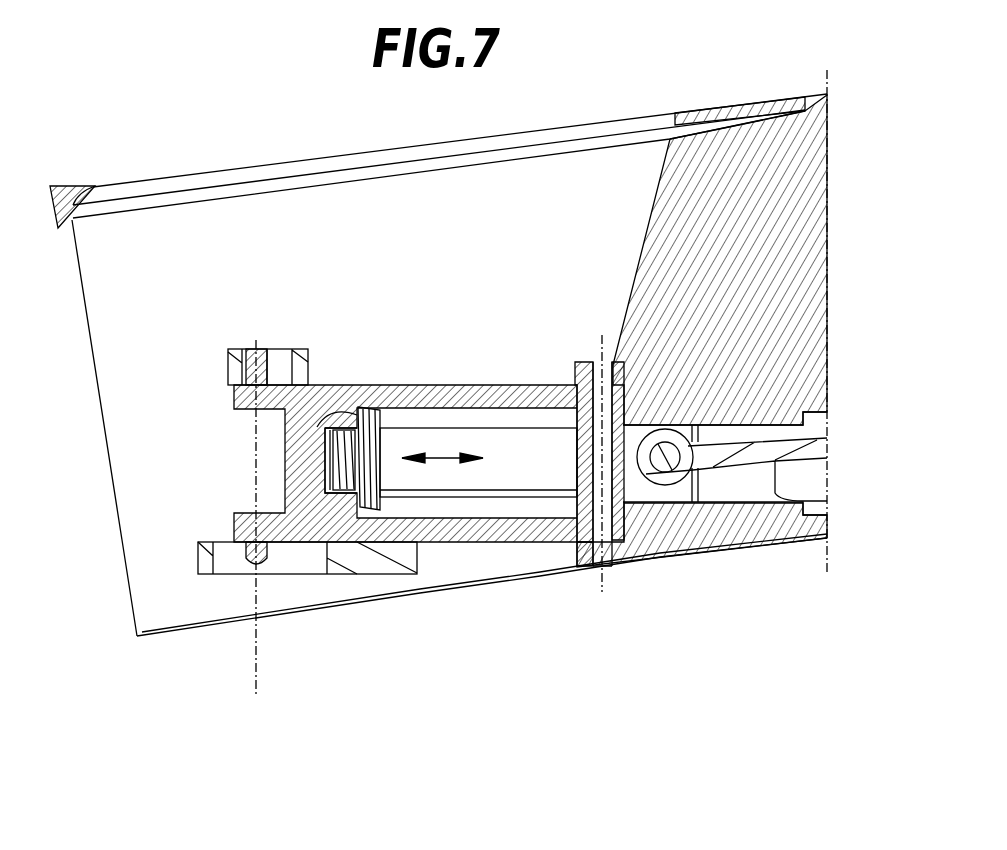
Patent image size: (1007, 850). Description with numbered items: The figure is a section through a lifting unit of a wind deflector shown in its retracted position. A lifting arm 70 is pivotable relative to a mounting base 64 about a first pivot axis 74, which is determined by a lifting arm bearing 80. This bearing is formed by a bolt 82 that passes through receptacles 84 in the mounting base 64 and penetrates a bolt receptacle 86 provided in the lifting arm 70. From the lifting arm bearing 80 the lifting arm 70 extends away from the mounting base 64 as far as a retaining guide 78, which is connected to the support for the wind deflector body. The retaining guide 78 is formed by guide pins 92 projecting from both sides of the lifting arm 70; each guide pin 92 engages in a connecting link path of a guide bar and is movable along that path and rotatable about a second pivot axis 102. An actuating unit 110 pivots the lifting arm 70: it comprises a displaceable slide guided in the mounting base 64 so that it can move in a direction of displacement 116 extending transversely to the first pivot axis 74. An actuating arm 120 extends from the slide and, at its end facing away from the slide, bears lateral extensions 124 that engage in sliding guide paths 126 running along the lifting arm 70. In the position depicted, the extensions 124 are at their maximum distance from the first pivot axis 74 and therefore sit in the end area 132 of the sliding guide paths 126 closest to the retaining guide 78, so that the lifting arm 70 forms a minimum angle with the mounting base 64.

The mounting base 64 is at (183, 600).
The lifting arm 70 is at (443, 533).
The first pivot axis 74 is at (603, 590).
The retaining guide 78 is at (249, 344).
The lifting arm bearing 80 is at (562, 562).
The bolt 82 is at (595, 362).
The receptacles 84 is at (617, 362).
The bolt receptacle 86 is at (605, 507).
The guide pins 92 is at (258, 355).
The second pivot axis 102 is at (257, 672).
The actuating unit 110 is at (297, 446).
The direction of displacement 116 is at (440, 456).
The actuating arm 120 is at (353, 477).
The lateral extensions 124 is at (369, 406).
The sliding guide paths 126 is at (512, 420).
The end area 132 is at (353, 417).